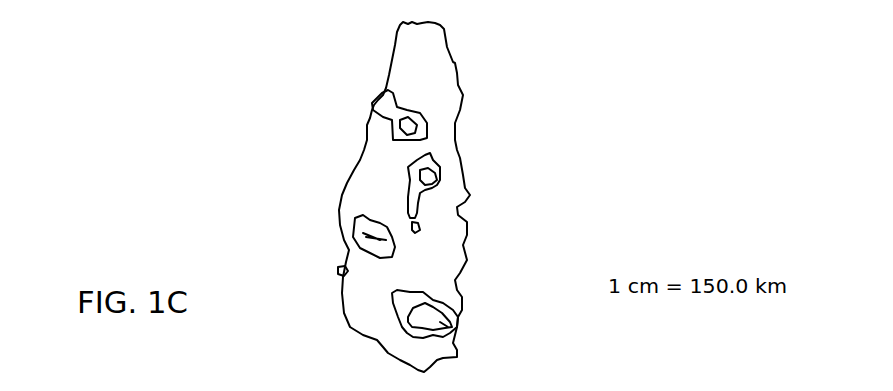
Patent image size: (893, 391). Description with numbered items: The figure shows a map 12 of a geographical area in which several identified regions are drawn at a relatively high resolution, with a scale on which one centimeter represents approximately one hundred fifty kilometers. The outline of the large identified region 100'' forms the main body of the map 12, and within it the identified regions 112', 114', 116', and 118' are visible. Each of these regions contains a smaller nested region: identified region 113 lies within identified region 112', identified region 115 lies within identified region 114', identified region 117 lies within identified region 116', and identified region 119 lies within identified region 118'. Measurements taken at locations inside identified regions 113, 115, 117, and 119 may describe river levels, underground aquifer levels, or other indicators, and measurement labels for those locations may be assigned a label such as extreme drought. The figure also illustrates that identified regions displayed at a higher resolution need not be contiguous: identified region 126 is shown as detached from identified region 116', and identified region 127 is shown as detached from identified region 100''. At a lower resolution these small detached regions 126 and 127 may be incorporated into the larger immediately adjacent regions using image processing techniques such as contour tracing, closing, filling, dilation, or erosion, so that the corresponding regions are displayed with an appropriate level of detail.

The map 12 is at (197, 142).
The identified region 100'' is at (445, 197).
The identified region 112' is at (353, 103).
The identified region 113 is at (390, 123).
The identified region 116' is at (474, 181).
The identified region 117 is at (438, 181).
The identified region 126 is at (420, 228).
The identified region 114' is at (322, 236).
The identified region 115 is at (348, 247).
The identified region 127 is at (337, 271).
The identified region 118' is at (477, 309).
The identified region 119 is at (440, 323).